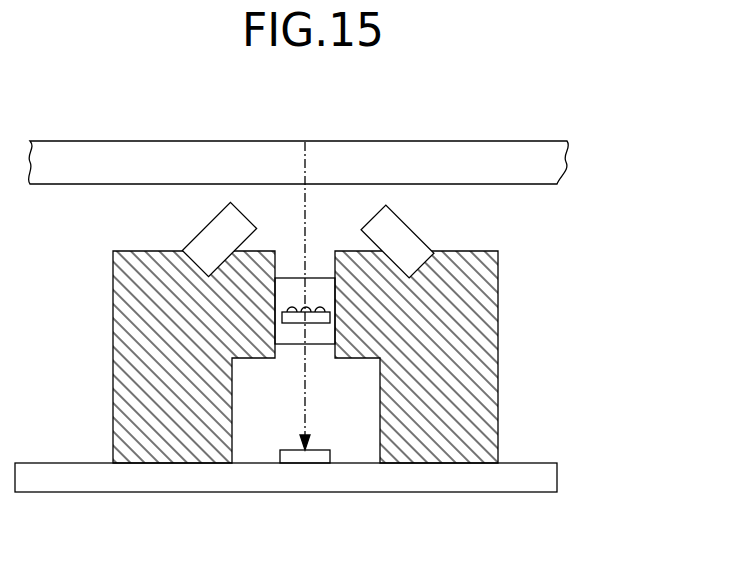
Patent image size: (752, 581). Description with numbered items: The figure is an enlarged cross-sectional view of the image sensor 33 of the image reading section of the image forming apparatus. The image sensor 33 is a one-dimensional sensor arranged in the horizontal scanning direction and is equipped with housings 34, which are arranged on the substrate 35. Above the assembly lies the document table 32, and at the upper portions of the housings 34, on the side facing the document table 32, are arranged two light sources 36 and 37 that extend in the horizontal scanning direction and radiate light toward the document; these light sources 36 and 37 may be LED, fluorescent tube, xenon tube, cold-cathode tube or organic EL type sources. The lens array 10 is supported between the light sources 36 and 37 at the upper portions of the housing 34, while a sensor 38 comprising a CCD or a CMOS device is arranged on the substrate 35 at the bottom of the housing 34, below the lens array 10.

The lens array 10 is at (280, 320).
The document table 32 is at (413, 146).
The image sensor 33 is at (328, 357).
The housing 34 is at (128, 387).
The substrate 35 is at (560, 472).
The light source 36 is at (200, 230).
The light source 37 is at (412, 223).
The sensor 38 is at (300, 460).